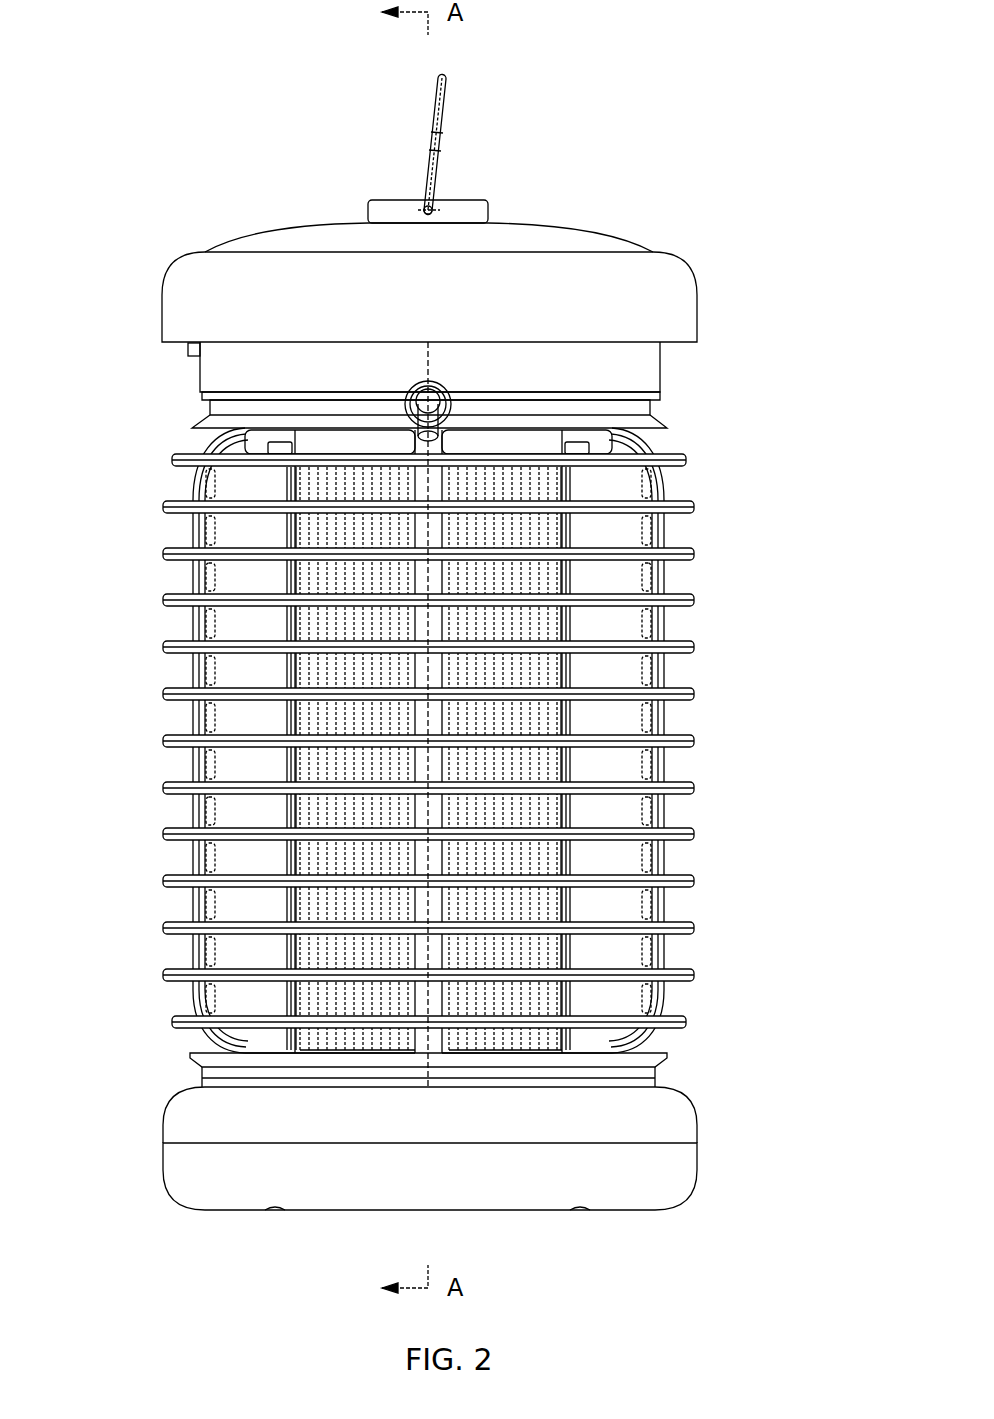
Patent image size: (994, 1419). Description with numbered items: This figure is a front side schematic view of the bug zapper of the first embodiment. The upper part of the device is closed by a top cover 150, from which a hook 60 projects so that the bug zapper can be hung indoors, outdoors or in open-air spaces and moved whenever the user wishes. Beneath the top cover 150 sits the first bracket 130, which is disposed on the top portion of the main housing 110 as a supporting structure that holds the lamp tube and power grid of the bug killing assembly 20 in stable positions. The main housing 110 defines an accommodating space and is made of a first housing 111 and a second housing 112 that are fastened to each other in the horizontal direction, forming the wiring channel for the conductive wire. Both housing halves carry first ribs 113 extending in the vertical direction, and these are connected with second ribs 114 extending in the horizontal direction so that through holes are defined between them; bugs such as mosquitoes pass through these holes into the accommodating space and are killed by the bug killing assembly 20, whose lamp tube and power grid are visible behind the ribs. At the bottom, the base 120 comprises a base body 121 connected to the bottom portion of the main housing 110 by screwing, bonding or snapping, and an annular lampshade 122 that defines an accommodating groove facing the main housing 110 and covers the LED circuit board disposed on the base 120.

The bug killing assembly 20 is at (572, 532).
The hook 60 is at (432, 143).
The main housing 110 is at (479, 740).
The first housing 111 is at (643, 645).
The second housing 112 is at (205, 724).
The first rib 113 is at (660, 724).
The second rib 114 is at (637, 793).
The base 120 is at (525, 1131).
The base body 121 is at (653, 1117).
The annular lampshade 122 is at (653, 1166).
The first bracket 130 is at (630, 370).
The top cover 150 is at (628, 307).